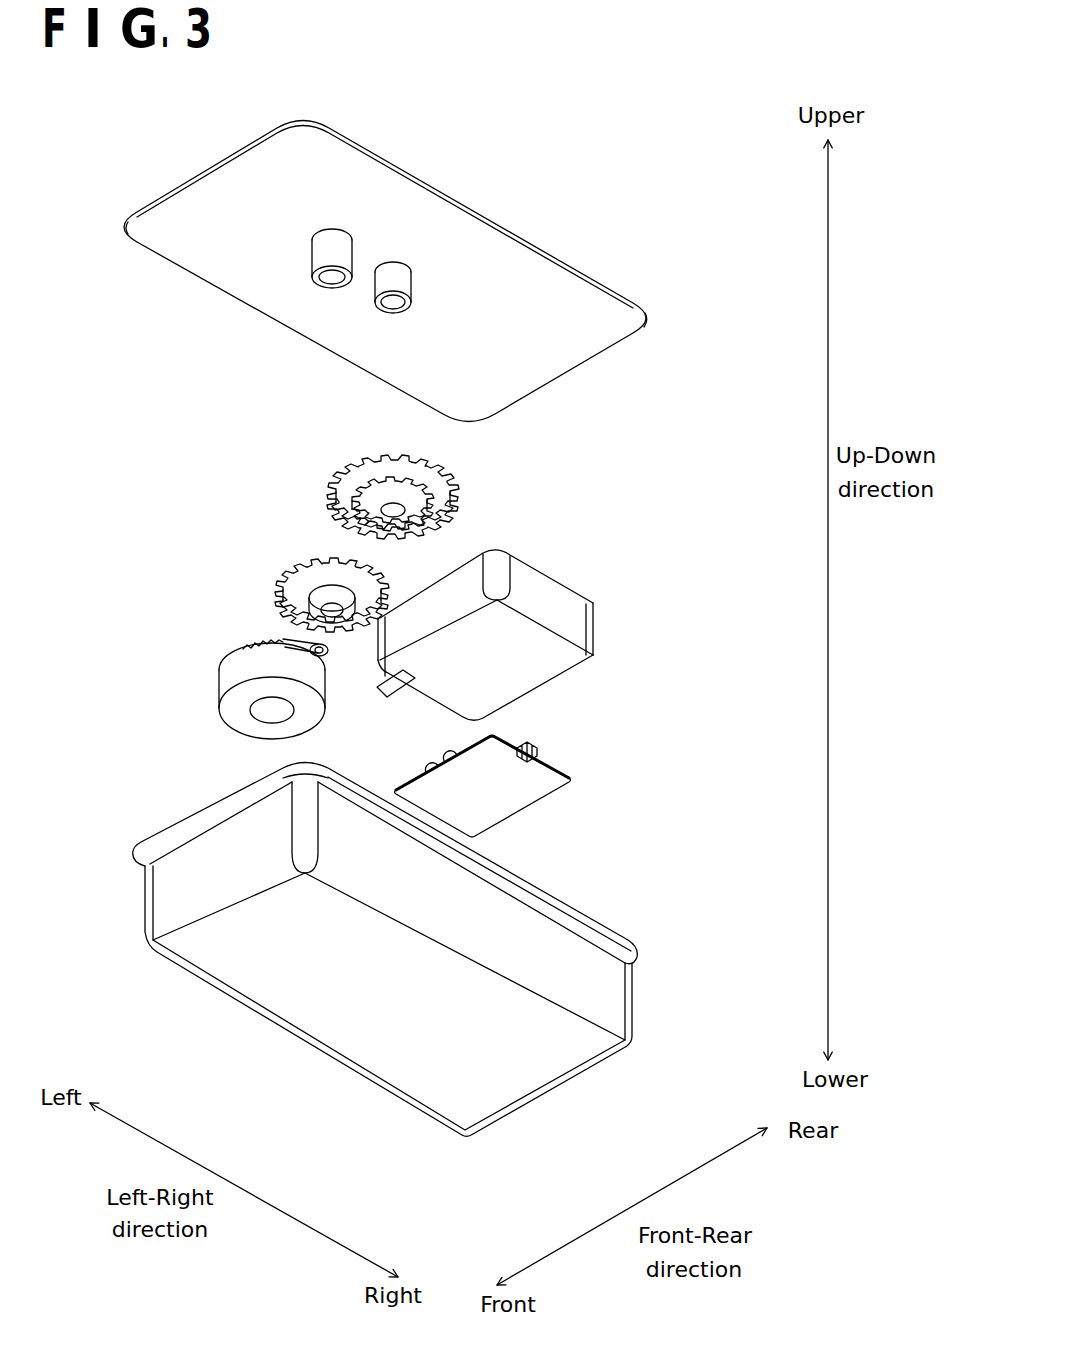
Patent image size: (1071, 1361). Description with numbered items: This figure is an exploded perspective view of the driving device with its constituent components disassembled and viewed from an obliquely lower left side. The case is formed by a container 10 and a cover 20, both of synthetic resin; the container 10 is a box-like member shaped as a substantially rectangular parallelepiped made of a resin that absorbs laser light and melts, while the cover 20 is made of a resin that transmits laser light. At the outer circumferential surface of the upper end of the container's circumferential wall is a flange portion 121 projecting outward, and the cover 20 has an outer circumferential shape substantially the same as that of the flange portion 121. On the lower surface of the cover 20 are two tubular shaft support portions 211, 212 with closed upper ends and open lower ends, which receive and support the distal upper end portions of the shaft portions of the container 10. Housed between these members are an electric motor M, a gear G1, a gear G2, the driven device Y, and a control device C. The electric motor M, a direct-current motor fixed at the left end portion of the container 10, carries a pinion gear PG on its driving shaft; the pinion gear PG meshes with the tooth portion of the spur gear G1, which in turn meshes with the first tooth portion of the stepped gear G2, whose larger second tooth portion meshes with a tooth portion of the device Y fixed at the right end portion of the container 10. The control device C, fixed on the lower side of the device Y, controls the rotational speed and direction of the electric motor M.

The container 10 is at (402, 950).
The flange portion 121 is at (628, 938).
The cover 20 is at (505, 203).
The shaft support portion 211 is at (309, 257).
The shaft support portion 212 is at (381, 273).
The gear G1 is at (297, 558).
The gear G2 is at (341, 462).
The electric motor M is at (240, 646).
The pinion gear PG is at (270, 640).
The device Y is at (566, 582).
The control device C is at (573, 782).